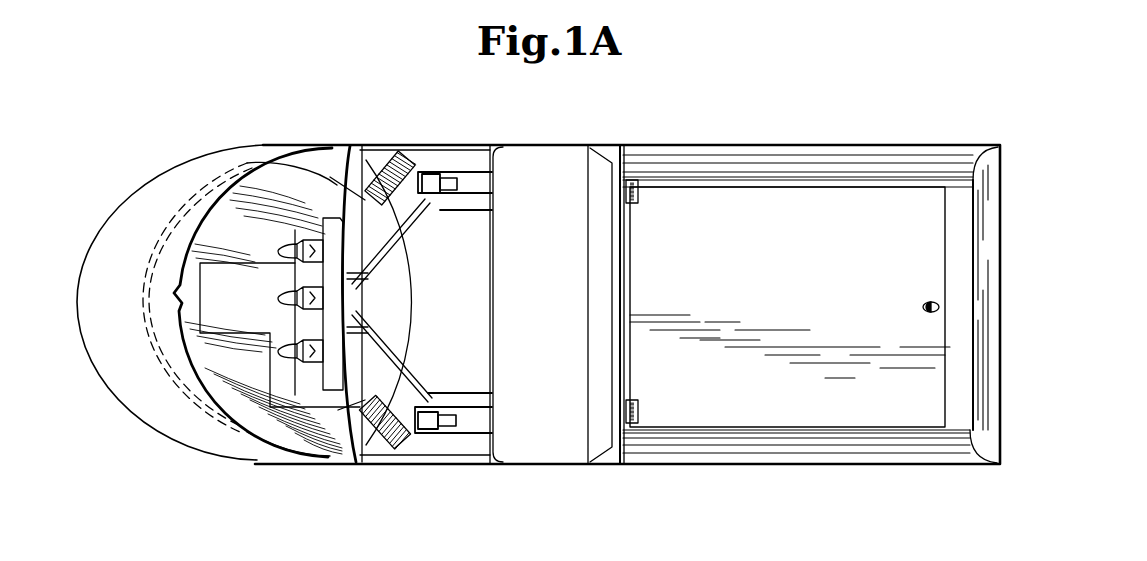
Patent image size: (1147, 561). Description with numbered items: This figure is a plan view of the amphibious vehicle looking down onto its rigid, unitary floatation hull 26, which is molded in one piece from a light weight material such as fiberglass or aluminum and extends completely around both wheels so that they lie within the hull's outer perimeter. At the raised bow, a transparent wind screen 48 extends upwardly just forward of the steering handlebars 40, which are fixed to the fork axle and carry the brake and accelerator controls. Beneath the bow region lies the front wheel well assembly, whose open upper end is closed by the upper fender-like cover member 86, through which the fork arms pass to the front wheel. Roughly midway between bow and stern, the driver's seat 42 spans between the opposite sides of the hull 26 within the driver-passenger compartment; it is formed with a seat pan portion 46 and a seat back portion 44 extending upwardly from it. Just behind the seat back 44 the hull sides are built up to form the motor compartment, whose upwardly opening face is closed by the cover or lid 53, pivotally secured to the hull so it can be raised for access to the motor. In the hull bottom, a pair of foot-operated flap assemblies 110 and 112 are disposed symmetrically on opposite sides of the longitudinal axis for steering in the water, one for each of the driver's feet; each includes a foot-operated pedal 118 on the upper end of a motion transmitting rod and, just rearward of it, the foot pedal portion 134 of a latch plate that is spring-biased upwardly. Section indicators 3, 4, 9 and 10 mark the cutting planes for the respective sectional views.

The transparent wind screen 48 is at (220, 240).
The upper fender-like cover member 86 is at (245, 297).
The floatation hull 26 is at (351, 460).
The steering handlebars 40 is at (378, 206).
The flap assembly 112 is at (438, 166).
The flap assembly 110 is at (446, 440).
The foot-operated pedal 118 is at (437, 196).
The foot pedal portion 134 is at (452, 193).
The driver's seat 42 is at (576, 148).
The seat pan portion 46 is at (515, 304).
The seat back portion 44 is at (590, 258).
The cover or lid 53 is at (767, 287).
The section line 3- 3 is at (200, 320).
The section line 4- 4 is at (256, 153).
The section line 9- 9 is at (470, 190).
The section line 10- 10 is at (400, 412).